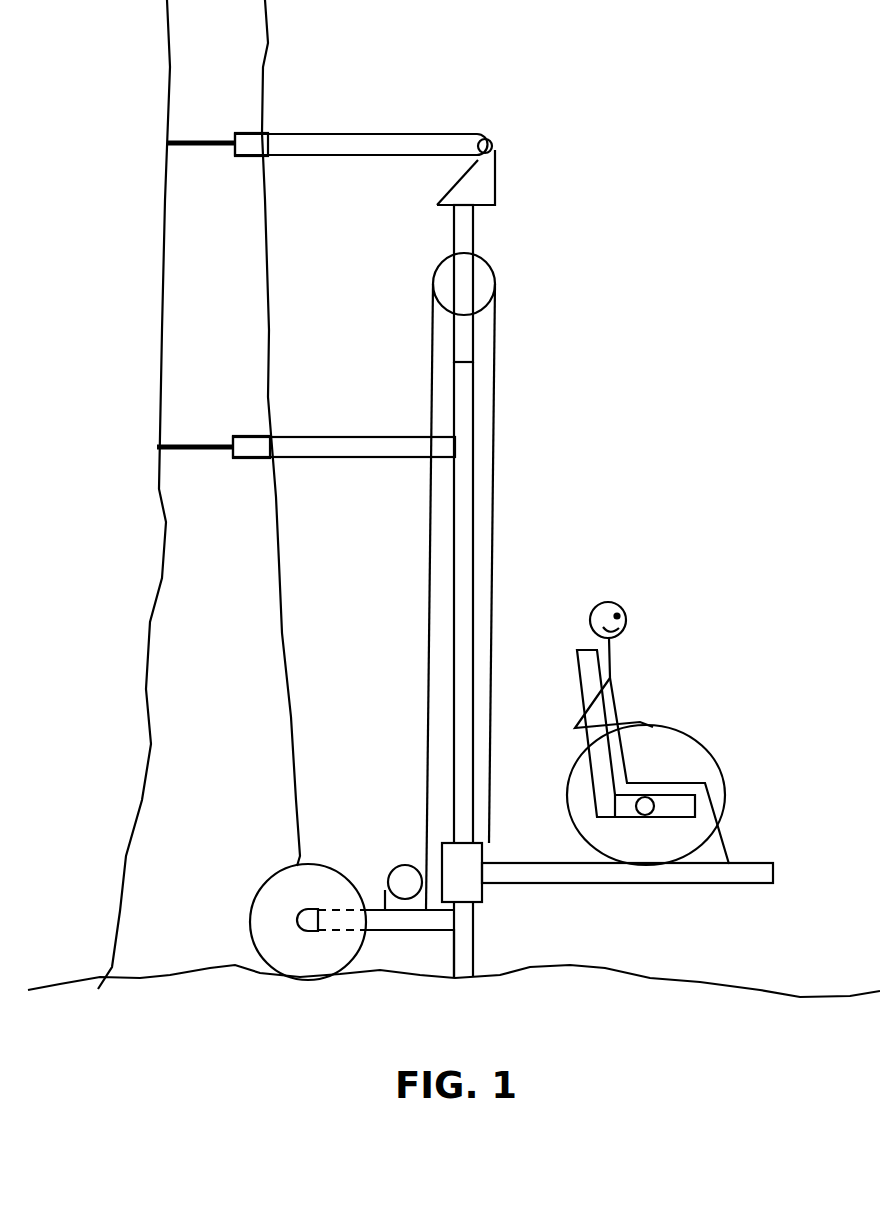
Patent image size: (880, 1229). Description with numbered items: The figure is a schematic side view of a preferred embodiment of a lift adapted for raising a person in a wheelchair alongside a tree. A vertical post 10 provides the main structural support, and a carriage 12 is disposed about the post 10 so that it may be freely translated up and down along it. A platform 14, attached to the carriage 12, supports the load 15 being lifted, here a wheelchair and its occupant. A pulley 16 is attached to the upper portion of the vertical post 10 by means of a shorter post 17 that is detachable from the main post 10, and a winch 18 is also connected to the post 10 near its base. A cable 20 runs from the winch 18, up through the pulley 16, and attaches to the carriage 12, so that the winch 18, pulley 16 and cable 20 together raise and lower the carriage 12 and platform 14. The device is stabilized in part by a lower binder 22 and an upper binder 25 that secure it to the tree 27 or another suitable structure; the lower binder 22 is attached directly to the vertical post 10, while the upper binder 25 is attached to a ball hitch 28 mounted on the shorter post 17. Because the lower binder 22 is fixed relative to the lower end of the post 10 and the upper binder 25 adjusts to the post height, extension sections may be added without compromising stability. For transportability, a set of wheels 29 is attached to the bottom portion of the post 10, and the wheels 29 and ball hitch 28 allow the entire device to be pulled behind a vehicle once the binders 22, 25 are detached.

The vertical post 10 is at (504, 669).
The carriage 12 is at (501, 862).
The platform 14 is at (627, 913).
The load 15 is at (648, 733).
The pulley 16 is at (502, 281).
The shorter post 17 is at (505, 283).
The winch 18 is at (383, 856).
The cable 20 is at (497, 597).
The lower binder 22 is at (306, 411).
The upper binder 25 is at (328, 109).
The tree 27 is at (189, 494).
The ball hitch 28 is at (505, 172).
The wheels 29 is at (348, 954).